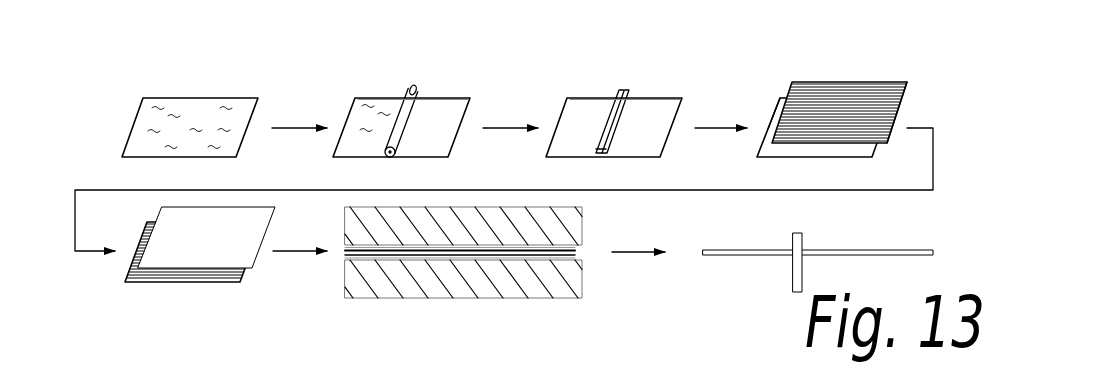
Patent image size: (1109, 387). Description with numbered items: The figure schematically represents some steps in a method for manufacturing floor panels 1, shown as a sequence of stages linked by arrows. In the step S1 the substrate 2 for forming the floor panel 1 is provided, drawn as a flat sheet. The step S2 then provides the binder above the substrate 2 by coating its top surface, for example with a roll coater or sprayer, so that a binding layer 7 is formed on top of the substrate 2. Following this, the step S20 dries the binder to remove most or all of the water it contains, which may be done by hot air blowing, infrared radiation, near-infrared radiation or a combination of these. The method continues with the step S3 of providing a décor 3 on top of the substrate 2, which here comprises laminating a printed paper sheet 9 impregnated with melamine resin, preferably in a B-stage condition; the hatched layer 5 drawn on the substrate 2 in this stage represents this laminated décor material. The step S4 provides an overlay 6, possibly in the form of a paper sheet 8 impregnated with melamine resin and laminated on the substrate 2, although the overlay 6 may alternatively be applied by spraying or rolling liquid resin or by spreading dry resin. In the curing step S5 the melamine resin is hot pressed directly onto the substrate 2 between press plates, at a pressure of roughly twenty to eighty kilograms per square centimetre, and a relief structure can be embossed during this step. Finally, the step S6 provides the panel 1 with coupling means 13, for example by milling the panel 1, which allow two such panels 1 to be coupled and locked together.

The floor panel 1 is at (708, 250).
The substrate 2 is at (134, 124).
The décor 3 is at (345, 250).
The fibre mat 5 is at (857, 92).
The overlay 6 is at (268, 222).
The binding layer 7 is at (455, 100).
The paper sheet 8 is at (780, 115).
The printed paper sheet 9 is at (905, 100).
The coupling means 13 is at (893, 250).
The step of providing the substrate S1 is at (235, 95).
The step of providing the binder S2 is at (382, 95).
The step of drying the binder S20 is at (585, 92).
The step of providing a décor S3 is at (782, 82).
The step of providing an overlay S4 is at (175, 287).
The curing step S5 is at (337, 283).
The step of providing coupling means S6 is at (763, 267).